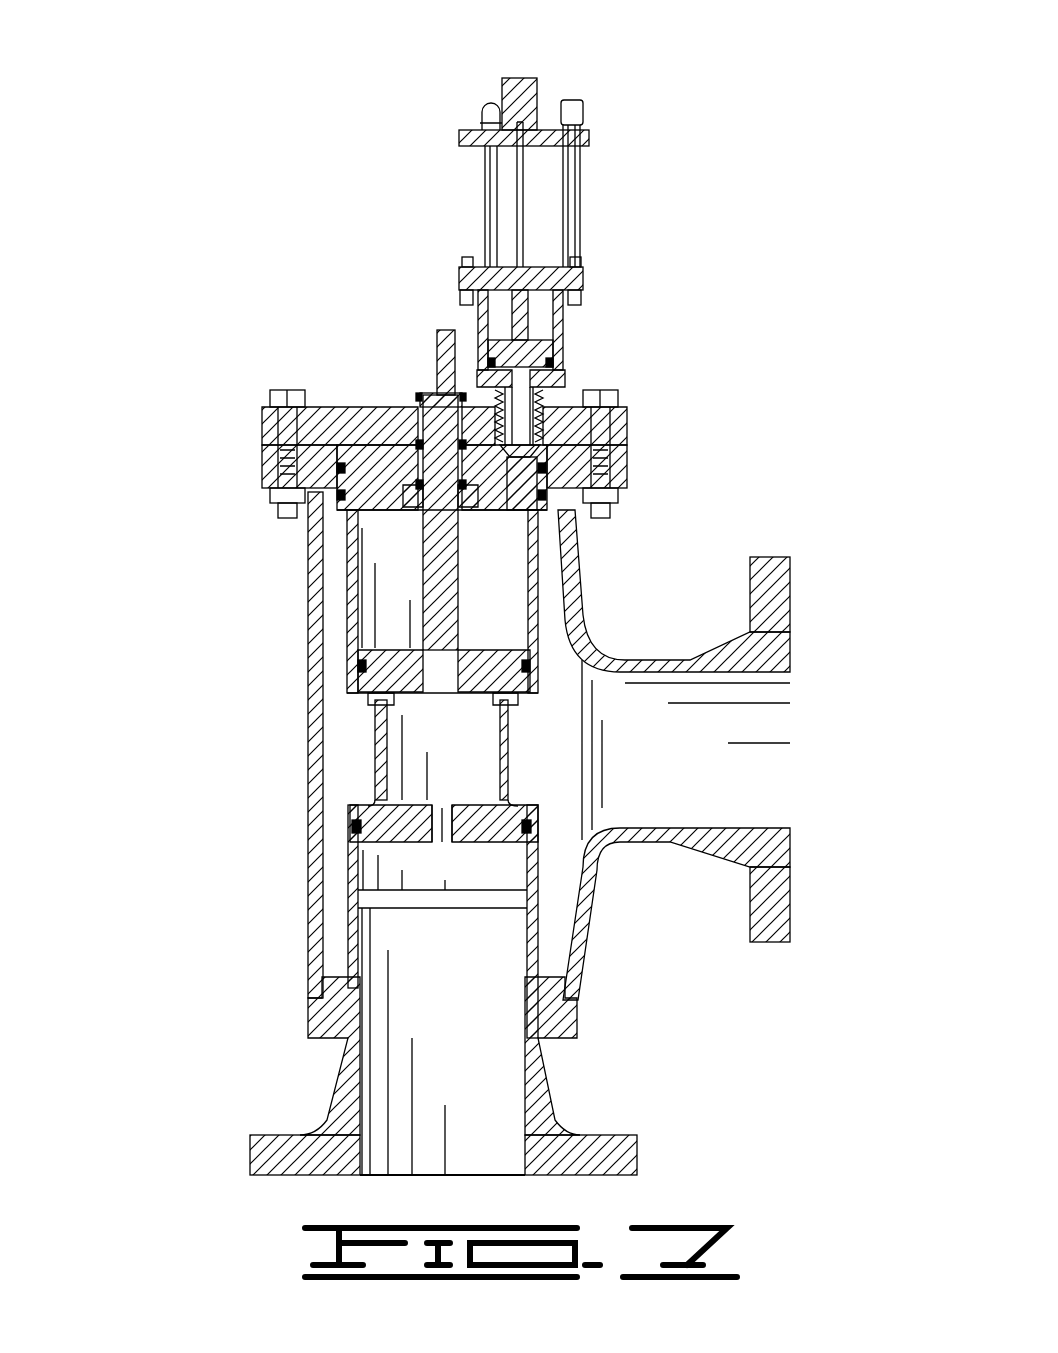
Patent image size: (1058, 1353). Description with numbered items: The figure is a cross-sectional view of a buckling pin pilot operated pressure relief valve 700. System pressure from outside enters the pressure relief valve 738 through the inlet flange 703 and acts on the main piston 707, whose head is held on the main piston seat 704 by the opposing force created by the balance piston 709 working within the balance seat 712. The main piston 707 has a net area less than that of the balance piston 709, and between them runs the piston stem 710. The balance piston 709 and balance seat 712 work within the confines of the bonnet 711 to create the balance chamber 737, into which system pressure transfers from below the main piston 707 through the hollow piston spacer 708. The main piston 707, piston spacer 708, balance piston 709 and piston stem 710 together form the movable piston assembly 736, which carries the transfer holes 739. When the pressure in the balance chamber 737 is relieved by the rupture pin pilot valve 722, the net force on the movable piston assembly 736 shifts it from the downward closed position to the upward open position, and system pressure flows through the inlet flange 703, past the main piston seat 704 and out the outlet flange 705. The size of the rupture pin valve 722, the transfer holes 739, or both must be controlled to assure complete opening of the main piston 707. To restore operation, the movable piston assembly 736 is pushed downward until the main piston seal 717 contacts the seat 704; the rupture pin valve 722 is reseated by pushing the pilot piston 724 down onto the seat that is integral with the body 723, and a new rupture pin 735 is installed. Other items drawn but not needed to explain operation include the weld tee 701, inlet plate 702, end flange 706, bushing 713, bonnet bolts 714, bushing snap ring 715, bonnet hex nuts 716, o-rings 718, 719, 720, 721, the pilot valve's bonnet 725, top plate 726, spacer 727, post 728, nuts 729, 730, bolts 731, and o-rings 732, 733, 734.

The buckling pin pilot operated pressure relief valve 700 is at (250, 325).
The weld tee 701 is at (318, 940).
The inlet plate 702 is at (557, 1022).
The inlet flange 703 is at (557, 1157).
The main piston seat 704 is at (533, 865).
The outlet flange 705 is at (775, 612).
The end flange 706 is at (625, 470).
The main piston 707 is at (355, 812).
The piston spacer 708 is at (378, 748).
The balance piston 709 is at (345, 693).
The piston stem 710 is at (430, 590).
The bonnet 711 is at (627, 422).
The balance seat 712 is at (548, 628).
The bushing 713 is at (405, 560).
The bonnet bolts 714 is at (430, 398).
The bushing snap ring 715 is at (278, 388).
The bonnet hex nuts 716 is at (272, 505).
The main piston seal 717 is at (352, 862).
The o-ring 718 is at (372, 668).
The o-ring 719 is at (410, 470).
The o-ring 720 is at (440, 385).
The o-ring 721 is at (313, 527).
The rupture pin pilot valve 722 is at (602, 108).
The body 723 is at (548, 400).
The pilot piston 724 is at (565, 322).
The bonnet 725 is at (462, 288).
The top plate 726 is at (495, 140).
The spacer 727 is at (583, 205).
The post 728 is at (583, 160).
The nut 729 is at (580, 102).
The nut 730 is at (512, 78).
The bolts 731 is at (462, 262).
The o-ring 732 is at (565, 372).
The o-ring 733 is at (558, 290).
The o-ring 734 is at (540, 268).
The rupture pin 735 is at (518, 178).
The movable piston assembly 736 is at (526, 773).
The balance chamber 737 is at (503, 586).
The pressure relief valve 738 is at (332, 868).
The transfer holes 739 is at (443, 803).